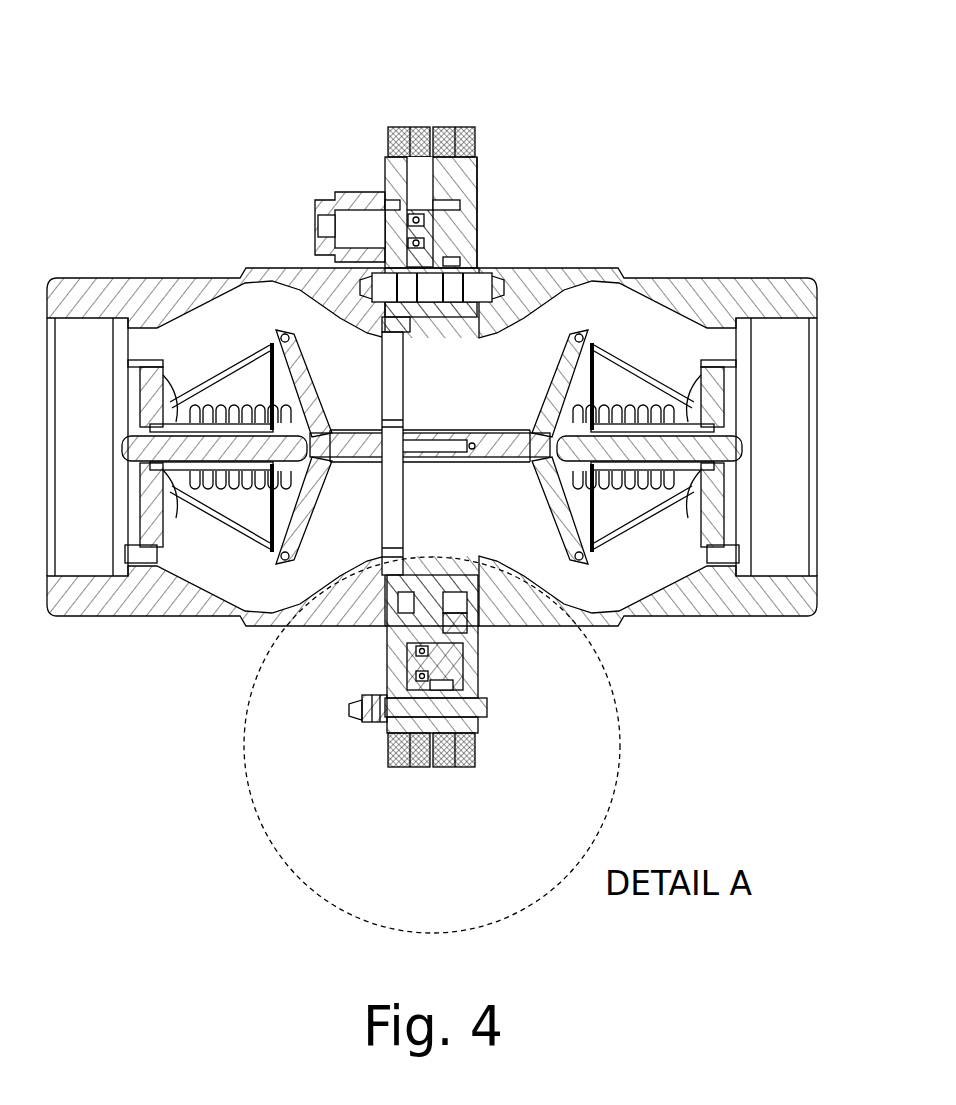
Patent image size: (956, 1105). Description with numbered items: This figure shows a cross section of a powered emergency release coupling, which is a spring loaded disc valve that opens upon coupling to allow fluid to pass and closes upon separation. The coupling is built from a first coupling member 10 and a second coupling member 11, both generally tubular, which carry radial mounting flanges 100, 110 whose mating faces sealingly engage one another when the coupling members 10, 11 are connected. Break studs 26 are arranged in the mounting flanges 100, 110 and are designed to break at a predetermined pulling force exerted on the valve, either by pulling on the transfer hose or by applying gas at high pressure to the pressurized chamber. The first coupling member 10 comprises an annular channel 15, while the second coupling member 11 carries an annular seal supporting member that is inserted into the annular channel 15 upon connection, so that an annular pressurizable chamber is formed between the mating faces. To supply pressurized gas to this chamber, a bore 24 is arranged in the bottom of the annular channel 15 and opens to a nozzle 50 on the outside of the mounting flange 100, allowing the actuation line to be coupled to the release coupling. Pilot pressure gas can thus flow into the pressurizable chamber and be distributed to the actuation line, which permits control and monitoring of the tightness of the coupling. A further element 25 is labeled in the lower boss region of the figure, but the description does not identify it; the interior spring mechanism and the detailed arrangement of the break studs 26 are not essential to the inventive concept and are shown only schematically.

The first coupling member 10 is at (100, 300).
The second coupling member 11 is at (778, 300).
The annular channel 15 is at (407, 213).
The bore 24 is at (440, 237).
The lower seal assembly 25 is at (437, 660).
The break studs 26 is at (390, 735).
The nozzle 50 is at (352, 172).
The mounting flange 100 is at (383, 155).
The mounting flange 110 is at (480, 195).